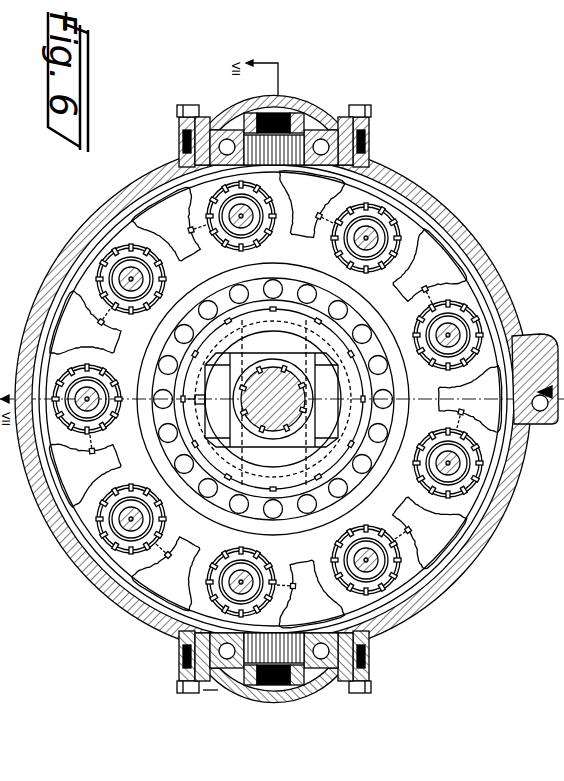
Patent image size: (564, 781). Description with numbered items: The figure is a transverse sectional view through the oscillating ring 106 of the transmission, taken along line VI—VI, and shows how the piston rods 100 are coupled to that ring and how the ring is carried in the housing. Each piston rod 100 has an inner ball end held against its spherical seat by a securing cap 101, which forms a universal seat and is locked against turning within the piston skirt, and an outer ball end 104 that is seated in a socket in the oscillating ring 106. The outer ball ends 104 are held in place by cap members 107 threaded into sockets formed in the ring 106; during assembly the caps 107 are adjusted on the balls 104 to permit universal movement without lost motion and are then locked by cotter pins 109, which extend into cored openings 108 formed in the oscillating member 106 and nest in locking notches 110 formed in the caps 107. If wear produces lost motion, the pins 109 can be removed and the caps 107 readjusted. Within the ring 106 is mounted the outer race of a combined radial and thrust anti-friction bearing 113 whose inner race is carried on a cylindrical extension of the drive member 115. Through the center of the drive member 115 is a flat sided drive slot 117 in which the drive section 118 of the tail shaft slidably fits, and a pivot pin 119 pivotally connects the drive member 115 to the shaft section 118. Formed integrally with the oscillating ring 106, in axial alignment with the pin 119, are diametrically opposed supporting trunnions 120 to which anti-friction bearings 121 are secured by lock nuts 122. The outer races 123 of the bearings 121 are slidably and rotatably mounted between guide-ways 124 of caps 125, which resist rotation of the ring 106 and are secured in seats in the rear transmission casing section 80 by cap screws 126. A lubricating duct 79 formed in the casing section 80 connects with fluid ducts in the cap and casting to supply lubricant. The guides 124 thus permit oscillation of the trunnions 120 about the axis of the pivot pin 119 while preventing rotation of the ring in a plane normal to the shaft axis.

The lubricating duct 79 is at (540, 426).
The rear transmission casing section 80 is at (440, 590).
The piston rods 100 is at (432, 399).
The securing caps 101 is at (163, 380).
The outer ball ends 104 is at (128, 305).
The oscillating ring 106 is at (396, 196).
The cap members 107 is at (520, 358).
The cored openings 108 is at (172, 196).
The locking cotter pins 109 is at (190, 229).
The locking notches 110 is at (425, 506).
The combined radial and thrust anti-friction bearing 113 is at (305, 540).
The drive member 115 is at (203, 502).
The flat sided drive slot 117 is at (307, 442).
The drive section 118 is at (333, 399).
The pivot pin 119 is at (296, 343).
The supporting trunnions 120 is at (276, 397).
The anti-friction bearings 121 is at (213, 118).
The lock nuts 122 is at (302, 117).
The outer races 123 is at (210, 688).
The guide-ways 124 is at (184, 132).
The caps 125 is at (182, 118).
The cap screws 126 is at (185, 106).